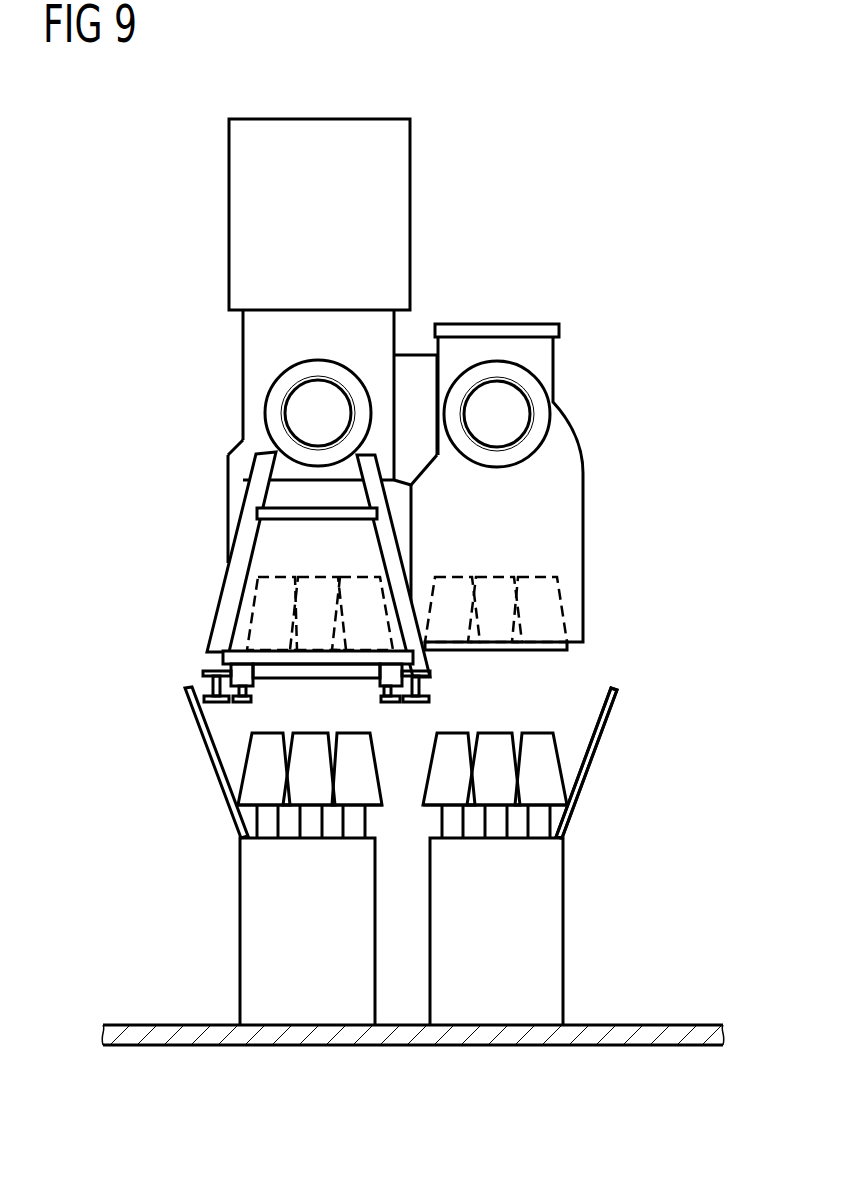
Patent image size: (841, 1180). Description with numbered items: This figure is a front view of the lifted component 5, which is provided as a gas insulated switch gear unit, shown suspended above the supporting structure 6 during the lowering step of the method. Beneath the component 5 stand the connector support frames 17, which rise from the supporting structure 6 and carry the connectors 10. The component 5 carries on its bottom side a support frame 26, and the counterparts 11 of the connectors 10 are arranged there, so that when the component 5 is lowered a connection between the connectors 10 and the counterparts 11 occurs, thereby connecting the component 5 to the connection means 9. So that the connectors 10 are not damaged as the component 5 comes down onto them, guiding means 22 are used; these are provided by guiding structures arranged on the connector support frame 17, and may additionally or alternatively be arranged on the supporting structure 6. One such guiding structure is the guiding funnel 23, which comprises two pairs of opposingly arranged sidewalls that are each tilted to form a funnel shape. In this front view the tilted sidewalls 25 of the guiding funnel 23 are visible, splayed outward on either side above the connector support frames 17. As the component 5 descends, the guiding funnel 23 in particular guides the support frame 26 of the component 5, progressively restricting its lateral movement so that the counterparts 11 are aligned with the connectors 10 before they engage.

The component 5 is at (560, 498).
The supporting structure 6 is at (650, 1035).
The connection means 9 is at (538, 822).
The connectors 10 is at (543, 768).
The counterparts 11 is at (552, 612).
The connector support frame 17 is at (255, 925).
The guiding means 22 is at (587, 780).
The guiding funnel 23 is at (637, 763).
The sidewalls 25 is at (210, 768).
The support frame 26 is at (240, 673).